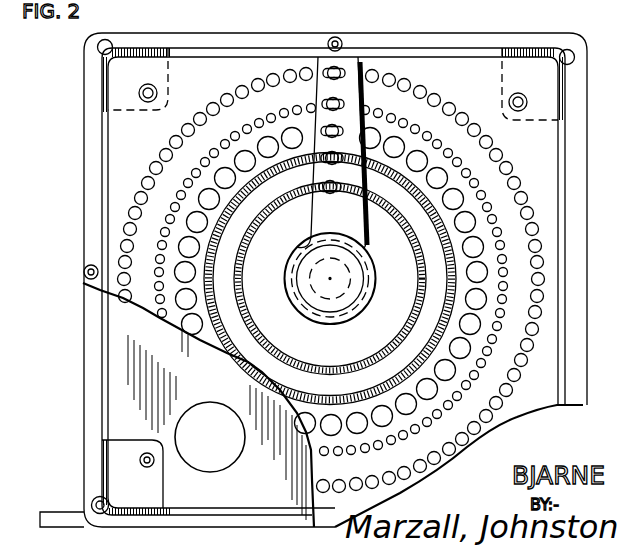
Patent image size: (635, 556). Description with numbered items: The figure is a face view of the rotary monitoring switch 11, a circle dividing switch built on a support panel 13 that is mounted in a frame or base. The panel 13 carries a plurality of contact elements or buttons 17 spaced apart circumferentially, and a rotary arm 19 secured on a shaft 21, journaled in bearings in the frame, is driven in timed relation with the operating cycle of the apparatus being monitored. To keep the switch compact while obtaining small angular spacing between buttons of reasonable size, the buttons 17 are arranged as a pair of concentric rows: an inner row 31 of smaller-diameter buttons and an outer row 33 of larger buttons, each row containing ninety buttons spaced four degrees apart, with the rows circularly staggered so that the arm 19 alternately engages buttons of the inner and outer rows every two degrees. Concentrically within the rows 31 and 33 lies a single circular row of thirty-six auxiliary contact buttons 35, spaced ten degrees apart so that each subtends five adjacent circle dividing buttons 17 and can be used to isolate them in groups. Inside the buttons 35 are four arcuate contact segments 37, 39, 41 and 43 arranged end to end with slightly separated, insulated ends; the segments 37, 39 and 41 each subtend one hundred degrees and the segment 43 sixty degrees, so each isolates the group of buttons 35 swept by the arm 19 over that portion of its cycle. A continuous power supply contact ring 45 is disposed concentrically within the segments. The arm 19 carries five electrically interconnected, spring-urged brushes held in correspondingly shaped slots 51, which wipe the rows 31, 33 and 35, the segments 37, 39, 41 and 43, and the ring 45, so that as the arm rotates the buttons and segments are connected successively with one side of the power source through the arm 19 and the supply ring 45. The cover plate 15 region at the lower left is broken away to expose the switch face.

The rotary monitoring switch 11 is at (124, 139).
The support panel 13 is at (513, 412).
The cover plate 15 is at (92, 350).
The contact elements or buttons 17 is at (306, 456).
The rotary arm 19 is at (358, 236).
The shaft 21 is at (312, 297).
The inner row of buttons 31 is at (164, 326).
The outer row of buttons 33 is at (121, 302).
The auxiliary contact buttons 35 is at (197, 344).
The first arcuate contact segment 37 is at (452, 263).
The second arcuate contact segment 39 is at (442, 330).
The third arcuate contact segment 41 is at (242, 302).
The fourth arcuate contact segment 43 is at (252, 213).
The power supply contact ring 45 is at (351, 396).
The brush slots 51 is at (357, 87).